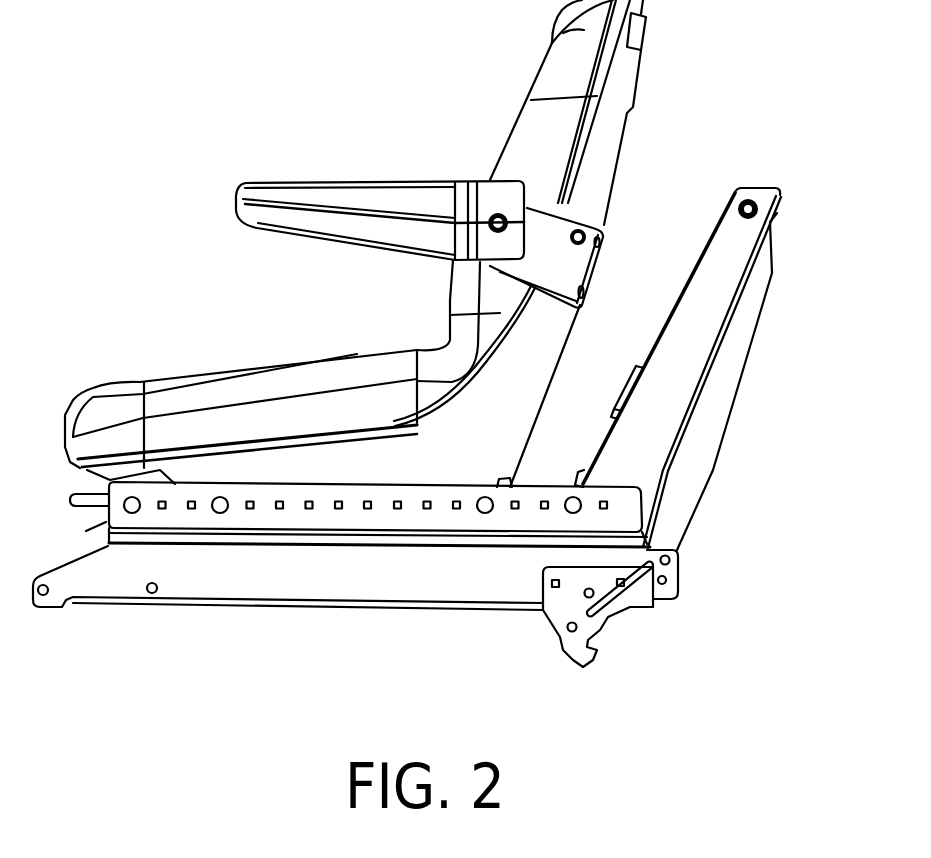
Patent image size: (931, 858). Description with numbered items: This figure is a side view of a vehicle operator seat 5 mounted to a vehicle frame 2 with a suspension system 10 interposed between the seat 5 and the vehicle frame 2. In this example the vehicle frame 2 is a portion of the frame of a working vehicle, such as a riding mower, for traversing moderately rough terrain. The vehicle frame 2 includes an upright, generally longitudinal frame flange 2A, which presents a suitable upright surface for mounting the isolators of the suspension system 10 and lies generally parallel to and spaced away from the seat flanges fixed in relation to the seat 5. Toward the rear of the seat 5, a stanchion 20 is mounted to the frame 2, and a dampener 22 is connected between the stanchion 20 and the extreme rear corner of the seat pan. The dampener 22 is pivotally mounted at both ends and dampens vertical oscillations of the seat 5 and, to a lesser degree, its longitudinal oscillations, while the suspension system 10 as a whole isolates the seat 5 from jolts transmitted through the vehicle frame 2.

The operator seat 5 is at (508, 93).
The suspension system 10 is at (542, 461).
The stanchion 20 is at (716, 313).
The dampener 22 is at (671, 303).
The vehicle frame 2 is at (250, 603).
The frame flange 2A is at (365, 525).